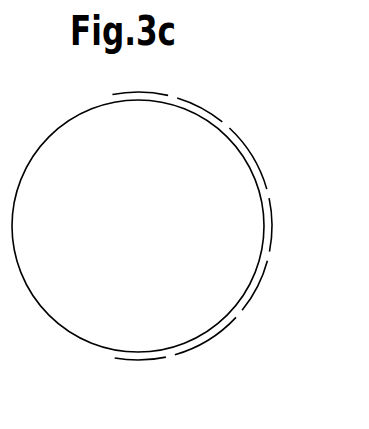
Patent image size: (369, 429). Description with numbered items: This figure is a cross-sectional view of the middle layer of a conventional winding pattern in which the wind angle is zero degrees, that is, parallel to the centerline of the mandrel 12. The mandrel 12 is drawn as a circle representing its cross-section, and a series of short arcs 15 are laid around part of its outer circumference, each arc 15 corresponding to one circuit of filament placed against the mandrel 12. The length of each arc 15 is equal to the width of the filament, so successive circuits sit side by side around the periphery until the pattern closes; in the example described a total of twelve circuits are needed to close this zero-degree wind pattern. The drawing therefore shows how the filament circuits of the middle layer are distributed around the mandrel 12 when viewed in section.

The mandrel 12 is at (38, 146).
The arc 15 is at (194, 230).